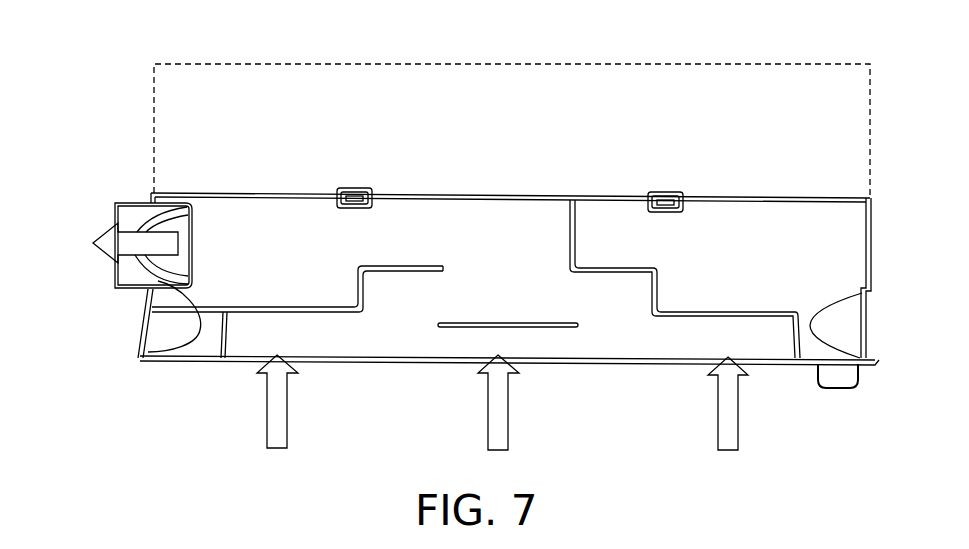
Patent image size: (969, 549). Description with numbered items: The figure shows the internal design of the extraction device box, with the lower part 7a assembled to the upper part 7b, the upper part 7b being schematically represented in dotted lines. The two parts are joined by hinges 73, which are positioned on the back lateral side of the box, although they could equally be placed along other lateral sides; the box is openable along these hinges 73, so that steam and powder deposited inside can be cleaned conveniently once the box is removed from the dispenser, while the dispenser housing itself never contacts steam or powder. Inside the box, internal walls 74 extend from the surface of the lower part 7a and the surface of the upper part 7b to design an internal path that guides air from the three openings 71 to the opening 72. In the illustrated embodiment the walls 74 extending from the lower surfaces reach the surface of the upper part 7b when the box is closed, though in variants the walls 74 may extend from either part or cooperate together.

The lower part 7a is at (843, 196).
The upper part 7b is at (708, 62).
The openings 71 is at (250, 360).
The opening 72 is at (115, 215).
The hinges 73 is at (353, 188).
The internal walls 74 is at (300, 307).